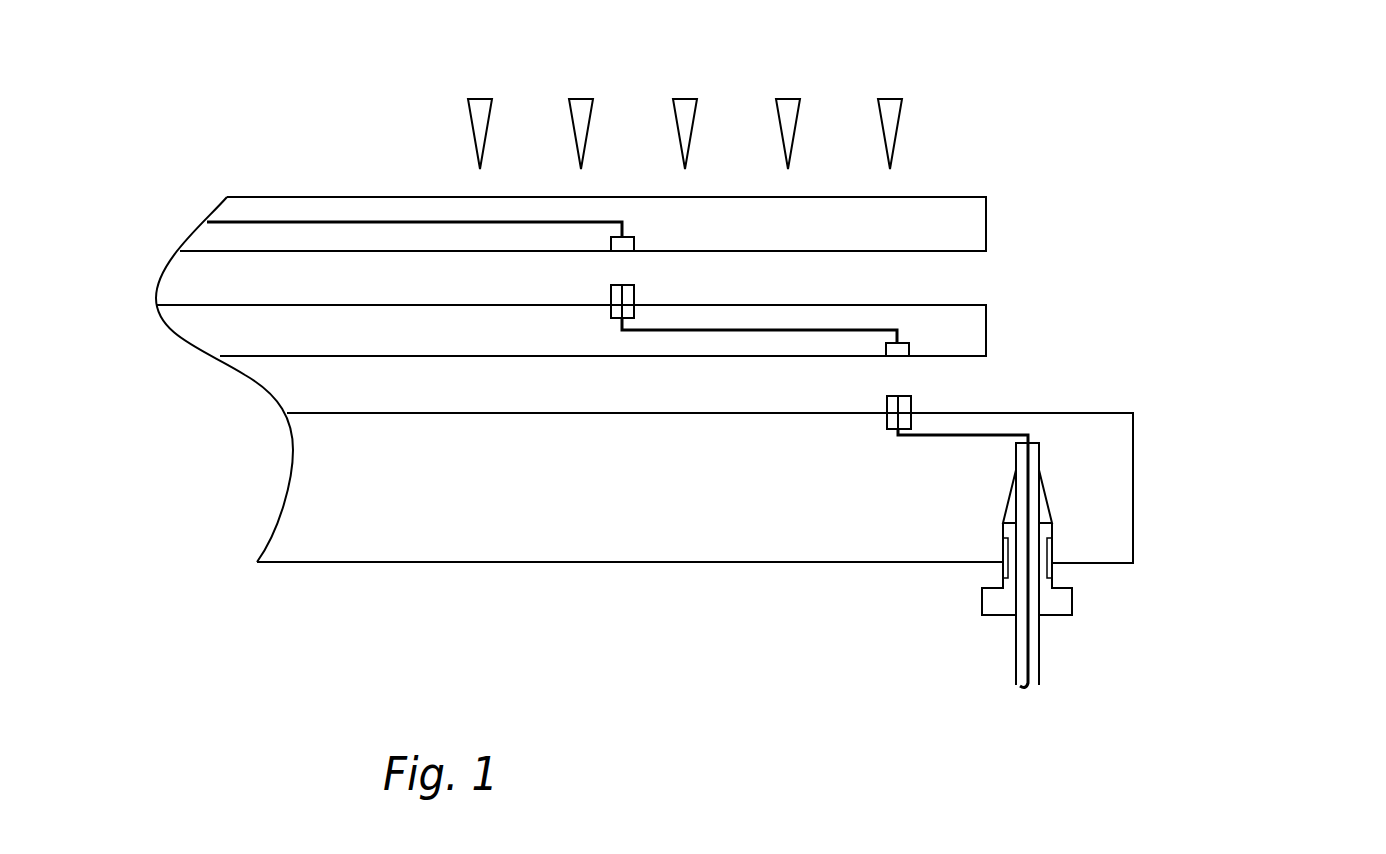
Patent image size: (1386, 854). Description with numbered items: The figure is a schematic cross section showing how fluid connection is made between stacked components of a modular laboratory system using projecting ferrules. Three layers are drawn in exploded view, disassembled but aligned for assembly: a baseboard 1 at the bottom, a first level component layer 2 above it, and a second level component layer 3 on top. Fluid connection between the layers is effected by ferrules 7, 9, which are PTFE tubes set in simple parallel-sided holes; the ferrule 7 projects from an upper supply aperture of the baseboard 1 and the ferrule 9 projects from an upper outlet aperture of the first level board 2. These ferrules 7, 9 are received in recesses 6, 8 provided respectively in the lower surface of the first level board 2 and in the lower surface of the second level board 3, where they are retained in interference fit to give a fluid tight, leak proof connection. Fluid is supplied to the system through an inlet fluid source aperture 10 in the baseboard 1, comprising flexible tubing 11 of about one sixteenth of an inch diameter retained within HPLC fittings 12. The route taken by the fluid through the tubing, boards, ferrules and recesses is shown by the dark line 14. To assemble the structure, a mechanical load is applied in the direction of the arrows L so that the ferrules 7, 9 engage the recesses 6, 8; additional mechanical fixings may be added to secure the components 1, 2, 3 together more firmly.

The baseboard 1 is at (1102, 523).
The first level component layer 2 is at (957, 332).
The second level component layer 3 is at (967, 222).
The recess 6 is at (905, 356).
The ferrule 7 is at (917, 402).
The recess 8 is at (611, 248).
The ferrule 9 is at (617, 302).
The inlet fluid source aperture 10 is at (1003, 560).
The flexible tubing 11 is at (1058, 680).
The HPLC fittings 12 is at (1065, 572).
The fluid path 14 is at (310, 222).
The arrows L is at (892, 99).